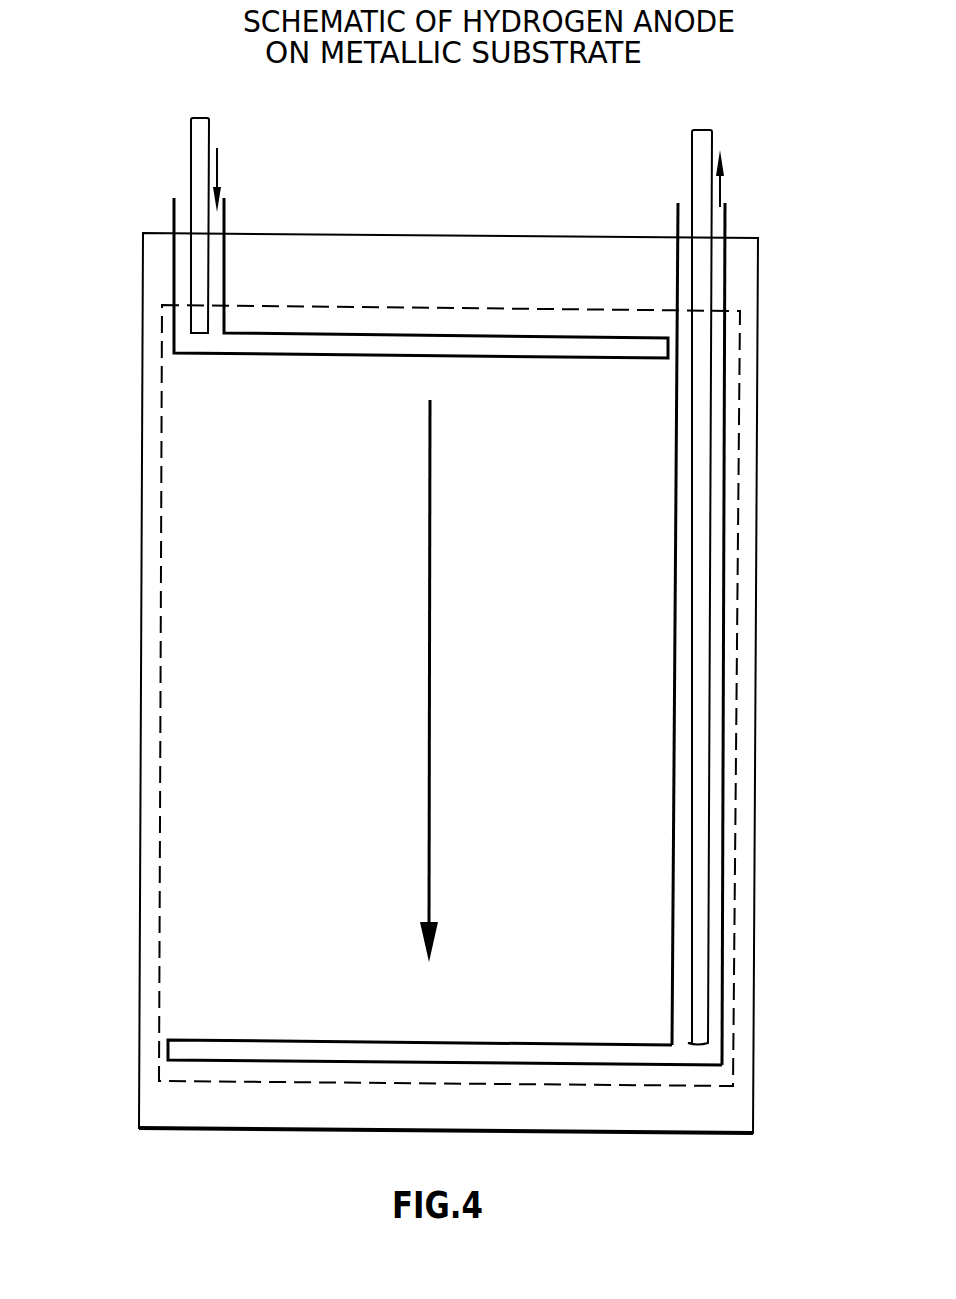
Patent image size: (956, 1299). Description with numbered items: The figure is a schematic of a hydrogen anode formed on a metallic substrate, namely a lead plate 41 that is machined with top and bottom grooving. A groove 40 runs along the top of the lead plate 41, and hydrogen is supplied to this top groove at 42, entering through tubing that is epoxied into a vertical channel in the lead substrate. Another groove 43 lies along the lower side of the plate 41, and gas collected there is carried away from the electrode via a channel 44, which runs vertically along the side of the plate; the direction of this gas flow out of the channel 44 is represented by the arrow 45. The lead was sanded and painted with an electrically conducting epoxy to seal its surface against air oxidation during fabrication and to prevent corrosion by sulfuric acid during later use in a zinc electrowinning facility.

The groove 40 is at (670, 345).
The lead plate 41 is at (743, 268).
The hydrogen supply 42 is at (218, 160).
The groove 43 is at (175, 1047).
The channel 44 is at (715, 787).
The arrow 45 is at (721, 185).